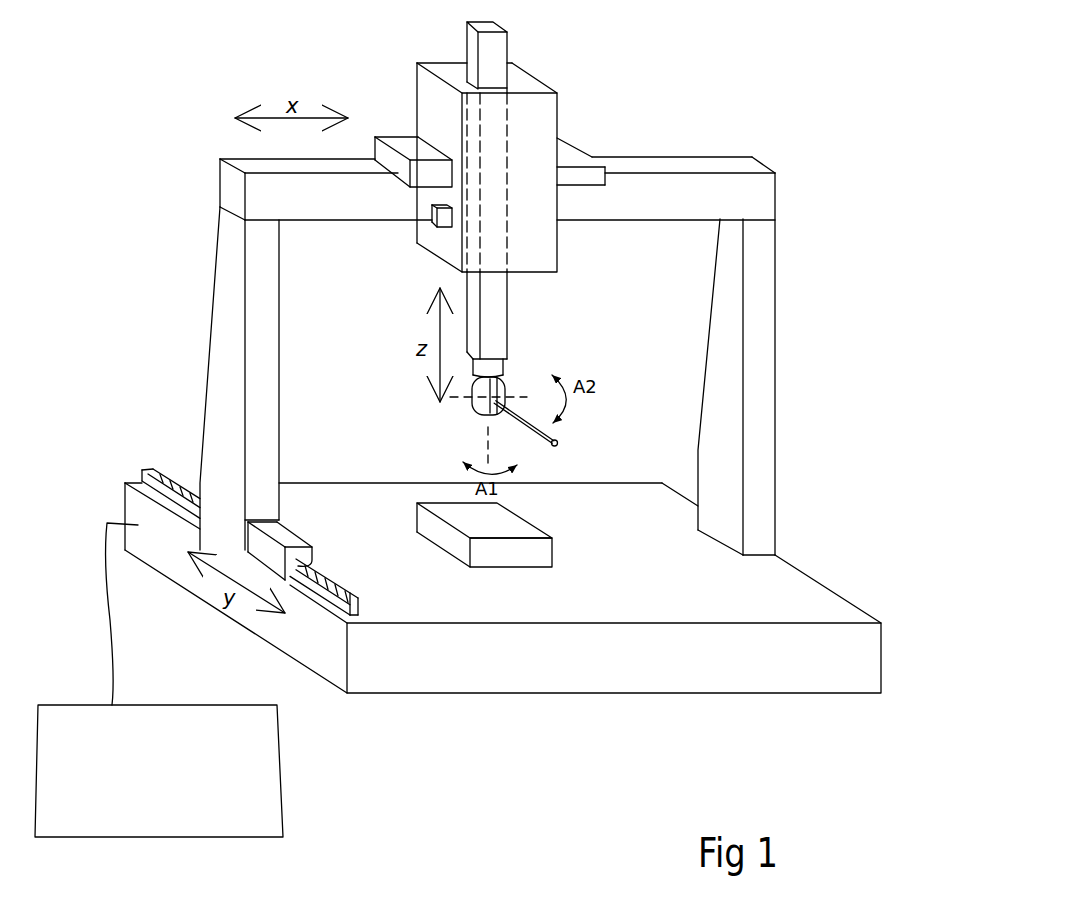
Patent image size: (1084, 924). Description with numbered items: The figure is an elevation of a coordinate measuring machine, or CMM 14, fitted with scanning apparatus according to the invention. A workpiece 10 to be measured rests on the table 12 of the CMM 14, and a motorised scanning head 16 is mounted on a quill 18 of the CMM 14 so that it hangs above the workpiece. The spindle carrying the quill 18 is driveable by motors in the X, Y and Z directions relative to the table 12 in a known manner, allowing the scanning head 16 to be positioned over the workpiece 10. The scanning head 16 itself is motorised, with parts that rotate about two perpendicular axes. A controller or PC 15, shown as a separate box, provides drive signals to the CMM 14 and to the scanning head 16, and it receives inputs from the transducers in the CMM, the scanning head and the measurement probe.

The workpiece 10 is at (542, 553).
The table 12 is at (527, 658).
The coordinate measuring machine 14 is at (713, 95).
The controller or PC 15 is at (220, 828).
The motorised scanning head 16 is at (463, 423).
The quill 18 is at (490, 317).